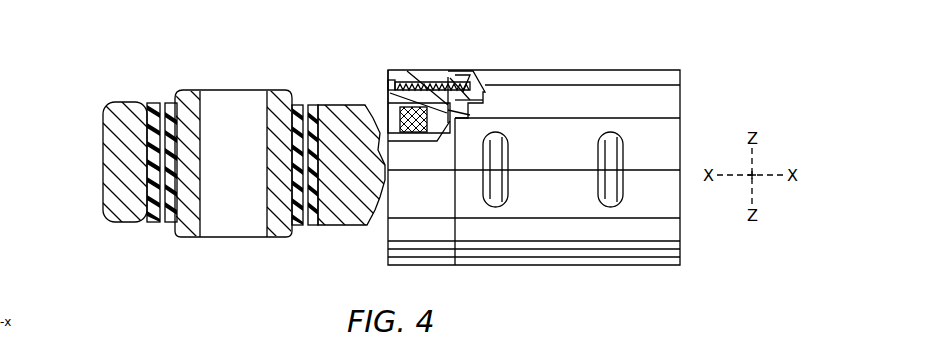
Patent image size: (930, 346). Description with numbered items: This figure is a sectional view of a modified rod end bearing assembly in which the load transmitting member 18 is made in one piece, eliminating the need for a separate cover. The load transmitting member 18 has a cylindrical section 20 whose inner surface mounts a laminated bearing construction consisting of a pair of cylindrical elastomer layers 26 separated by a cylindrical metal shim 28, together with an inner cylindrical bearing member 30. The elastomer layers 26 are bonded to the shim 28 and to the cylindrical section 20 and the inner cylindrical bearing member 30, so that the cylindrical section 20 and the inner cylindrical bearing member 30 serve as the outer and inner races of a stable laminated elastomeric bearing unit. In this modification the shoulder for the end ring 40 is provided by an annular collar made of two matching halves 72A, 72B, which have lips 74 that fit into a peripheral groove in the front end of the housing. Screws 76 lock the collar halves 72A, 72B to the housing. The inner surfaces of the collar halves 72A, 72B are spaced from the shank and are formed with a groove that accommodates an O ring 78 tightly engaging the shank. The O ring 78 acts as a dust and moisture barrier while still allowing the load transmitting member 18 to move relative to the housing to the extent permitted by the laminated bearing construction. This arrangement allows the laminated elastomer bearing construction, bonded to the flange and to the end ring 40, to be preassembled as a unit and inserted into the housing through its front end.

The load transmitting member 18 is at (338, 105).
The cylindrical section 20 is at (103, 130).
The cylindrical elastomer layers 26 is at (170, 103).
The cylindrical metal shim 28 is at (162, 222).
The inner cylindrical bearing member 30 is at (185, 90).
The end ring 40 is at (478, 103).
The collar half 72A is at (405, 75).
The collar half 72B is at (392, 232).
The lips 74 is at (456, 72).
The screws 76 is at (423, 83).
The O ring 78 is at (398, 112).